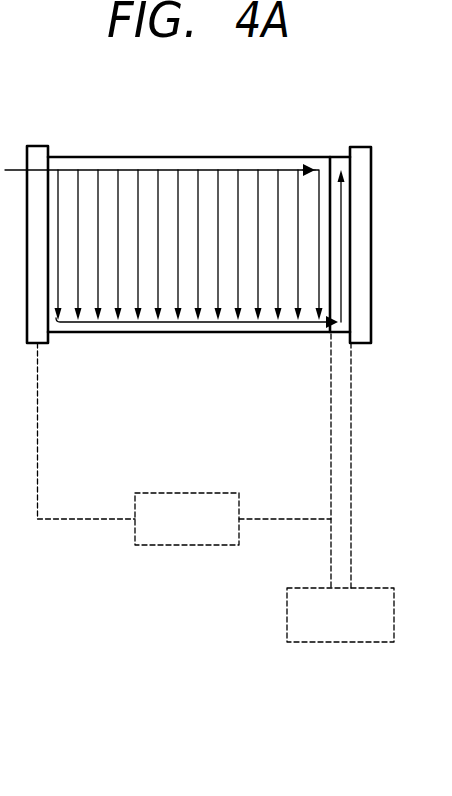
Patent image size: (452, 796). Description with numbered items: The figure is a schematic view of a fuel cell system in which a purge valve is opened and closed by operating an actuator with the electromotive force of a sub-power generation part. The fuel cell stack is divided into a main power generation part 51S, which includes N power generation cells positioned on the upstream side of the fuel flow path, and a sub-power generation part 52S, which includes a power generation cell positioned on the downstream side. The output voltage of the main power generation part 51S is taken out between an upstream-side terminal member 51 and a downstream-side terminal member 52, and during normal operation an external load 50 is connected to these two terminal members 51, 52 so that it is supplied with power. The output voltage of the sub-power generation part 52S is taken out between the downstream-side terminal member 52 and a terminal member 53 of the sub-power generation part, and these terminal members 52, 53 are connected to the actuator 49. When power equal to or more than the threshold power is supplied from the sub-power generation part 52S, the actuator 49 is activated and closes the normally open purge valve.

The actuator 49 is at (376, 588).
The external load 50 is at (180, 545).
The upstream-side terminal member 51 is at (40, 391).
The downstream-side terminal member 52 is at (331, 376).
The terminal member of the sub-power generation part 53 is at (351, 388).
The main power generation part 51S is at (328, 130).
The sub-power generation part 52S is at (350, 130).